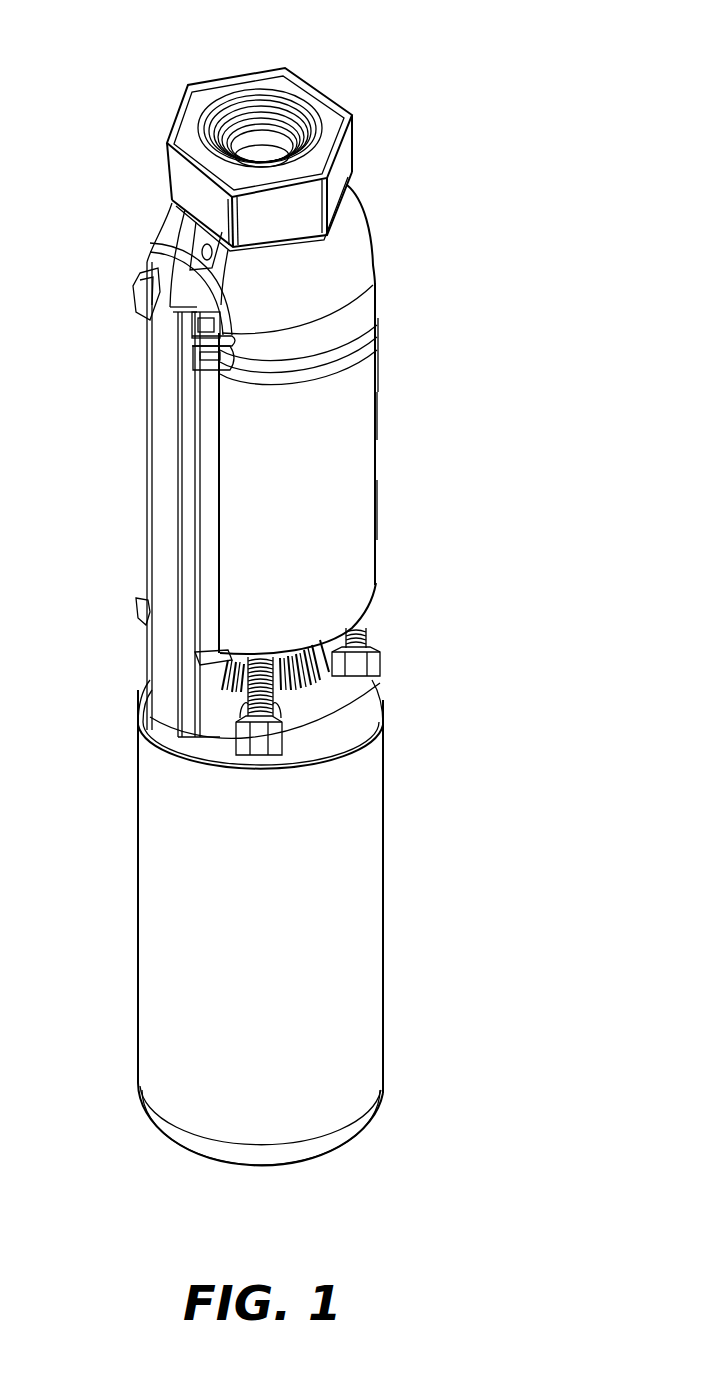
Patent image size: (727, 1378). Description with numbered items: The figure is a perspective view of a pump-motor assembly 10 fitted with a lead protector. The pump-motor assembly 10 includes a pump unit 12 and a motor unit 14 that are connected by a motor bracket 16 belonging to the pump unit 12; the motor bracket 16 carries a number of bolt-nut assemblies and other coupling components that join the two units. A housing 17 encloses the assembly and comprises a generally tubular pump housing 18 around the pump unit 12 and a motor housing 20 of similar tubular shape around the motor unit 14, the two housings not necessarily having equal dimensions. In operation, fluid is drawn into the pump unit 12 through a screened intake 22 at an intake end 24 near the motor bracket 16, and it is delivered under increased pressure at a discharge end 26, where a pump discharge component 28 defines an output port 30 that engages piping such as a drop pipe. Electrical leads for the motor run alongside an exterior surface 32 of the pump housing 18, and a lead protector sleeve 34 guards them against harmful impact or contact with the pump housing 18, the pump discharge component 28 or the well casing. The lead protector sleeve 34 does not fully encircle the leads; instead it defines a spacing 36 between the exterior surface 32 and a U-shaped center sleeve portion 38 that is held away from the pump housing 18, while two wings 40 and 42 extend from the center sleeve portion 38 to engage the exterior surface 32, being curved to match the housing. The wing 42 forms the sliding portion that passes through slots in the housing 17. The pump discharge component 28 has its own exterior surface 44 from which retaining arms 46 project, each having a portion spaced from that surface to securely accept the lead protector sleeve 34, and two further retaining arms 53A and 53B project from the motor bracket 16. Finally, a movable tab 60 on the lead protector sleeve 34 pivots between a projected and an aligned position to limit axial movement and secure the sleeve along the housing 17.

The pump-motor assembly 10 is at (460, 1028).
The pump unit 12 is at (377, 462).
The motor unit 14 is at (386, 868).
The motor bracket 16 is at (366, 662).
The housing 17 is at (545, 630).
The pump housing 18 is at (377, 510).
The motor housing 20 is at (386, 797).
The screened intake 22 is at (305, 690).
The intake end 24 is at (385, 622).
The discharge end 26 is at (372, 326).
The pump discharge component 28 is at (362, 234).
The output port 30 is at (250, 110).
The exterior surface 32 is at (377, 417).
The lead protector sleeve 34 is at (160, 455).
The spacing 36 is at (150, 200).
The center sleeve portion 38 is at (147, 340).
The wing 40 is at (148, 407).
The wing 42 is at (206, 476).
The exterior surface 44 is at (367, 307).
The retaining arms 46 is at (150, 244).
The retaining arm 53A is at (142, 602).
The retaining arm 53B is at (214, 654).
The tab 60 is at (192, 366).